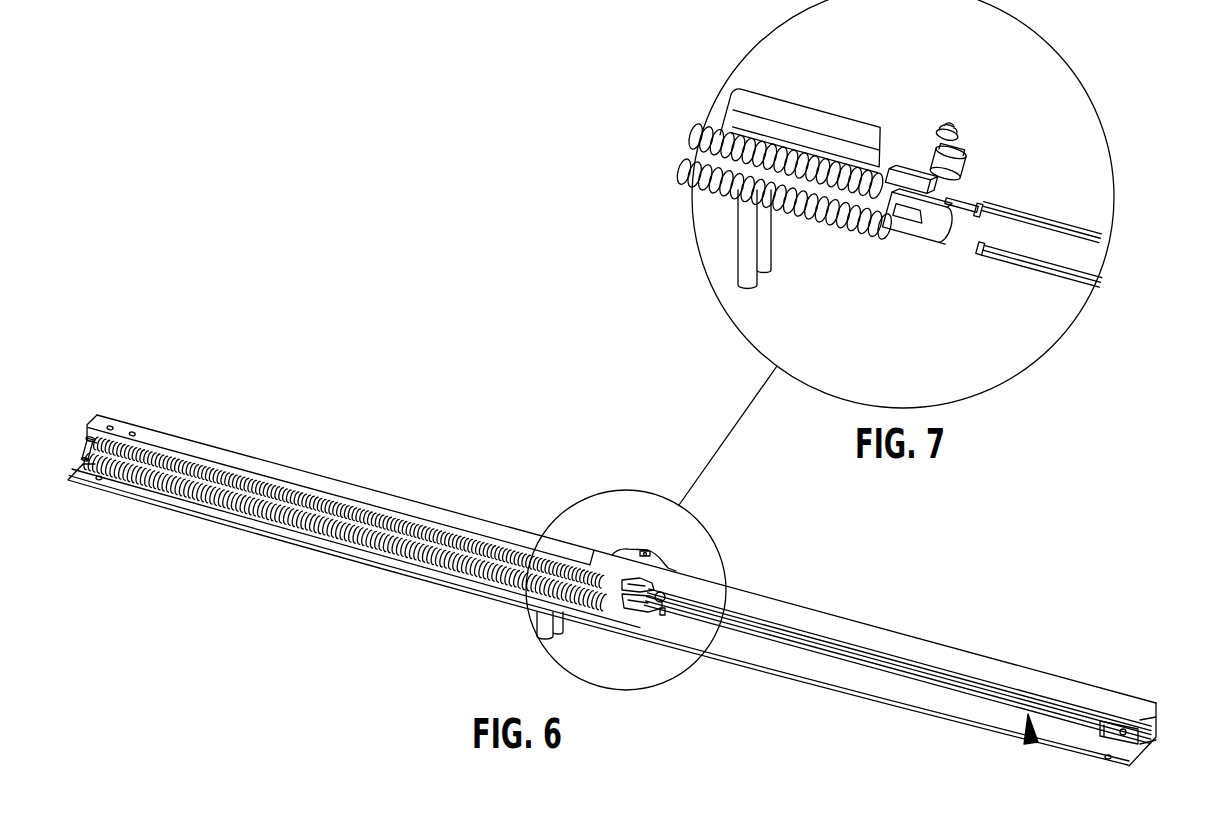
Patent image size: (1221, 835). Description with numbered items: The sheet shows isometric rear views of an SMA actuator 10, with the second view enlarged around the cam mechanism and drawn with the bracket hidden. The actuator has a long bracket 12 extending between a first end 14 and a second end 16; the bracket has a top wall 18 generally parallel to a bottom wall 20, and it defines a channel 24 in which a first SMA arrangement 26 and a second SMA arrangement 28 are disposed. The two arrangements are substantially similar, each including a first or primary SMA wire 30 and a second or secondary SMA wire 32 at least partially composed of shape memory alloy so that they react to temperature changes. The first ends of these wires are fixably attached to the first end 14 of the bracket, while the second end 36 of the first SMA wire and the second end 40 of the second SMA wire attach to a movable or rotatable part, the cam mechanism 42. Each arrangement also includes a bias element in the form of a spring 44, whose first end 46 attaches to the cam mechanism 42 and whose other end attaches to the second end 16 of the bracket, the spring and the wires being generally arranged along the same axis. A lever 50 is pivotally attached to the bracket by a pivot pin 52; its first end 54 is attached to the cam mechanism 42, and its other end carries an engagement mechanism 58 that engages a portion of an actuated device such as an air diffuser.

In FIG. 6, the SMA actuator 10 is at (128, 368).
In FIG. 6, the bracket 12 is at (932, 648).
In FIG. 6, the first end 14 is at (1160, 725).
In FIG. 6, the second end 16 is at (88, 445).
In FIG. 6, the top wall 18 is at (203, 450).
In FIG. 6, the bottom wall 20 is at (205, 505).
In FIG. 6, the channel 24 is at (1032, 744).
In FIG. 7, the first SMA arrangement 26 is at (710, 140).
In FIG. 7, the second SMA arrangement 28 is at (692, 165).
In FIG. 7, the first SMA wire 30 is at (1057, 217).
In FIG. 7, the second SMA wire 32 is at (1010, 202).
In FIG. 7, the second end 36 is at (980, 207).
In FIG. 7, the second end 40 is at (963, 193).
In FIG. 6, the cam mechanism 42 is at (664, 568).
In FIG. 7, the cam mechanism 42 is at (903, 167).
In FIG. 6, the spring 44 is at (373, 513).
In FIG. 7, the spring 44 is at (805, 135).
In FIG. 7, the first end 46 is at (873, 170).
In FIG. 7, the lever 50 is at (770, 98).
In FIG. 6, the pivot pin 52 is at (645, 553).
In FIG. 7, the pivot pin 52 is at (957, 133).
In FIG. 7, the first end 54 is at (912, 230).
In FIG. 6, the engagement mechanism 58 is at (542, 628).
In FIG. 7, the engagement mechanism 58 is at (742, 280).